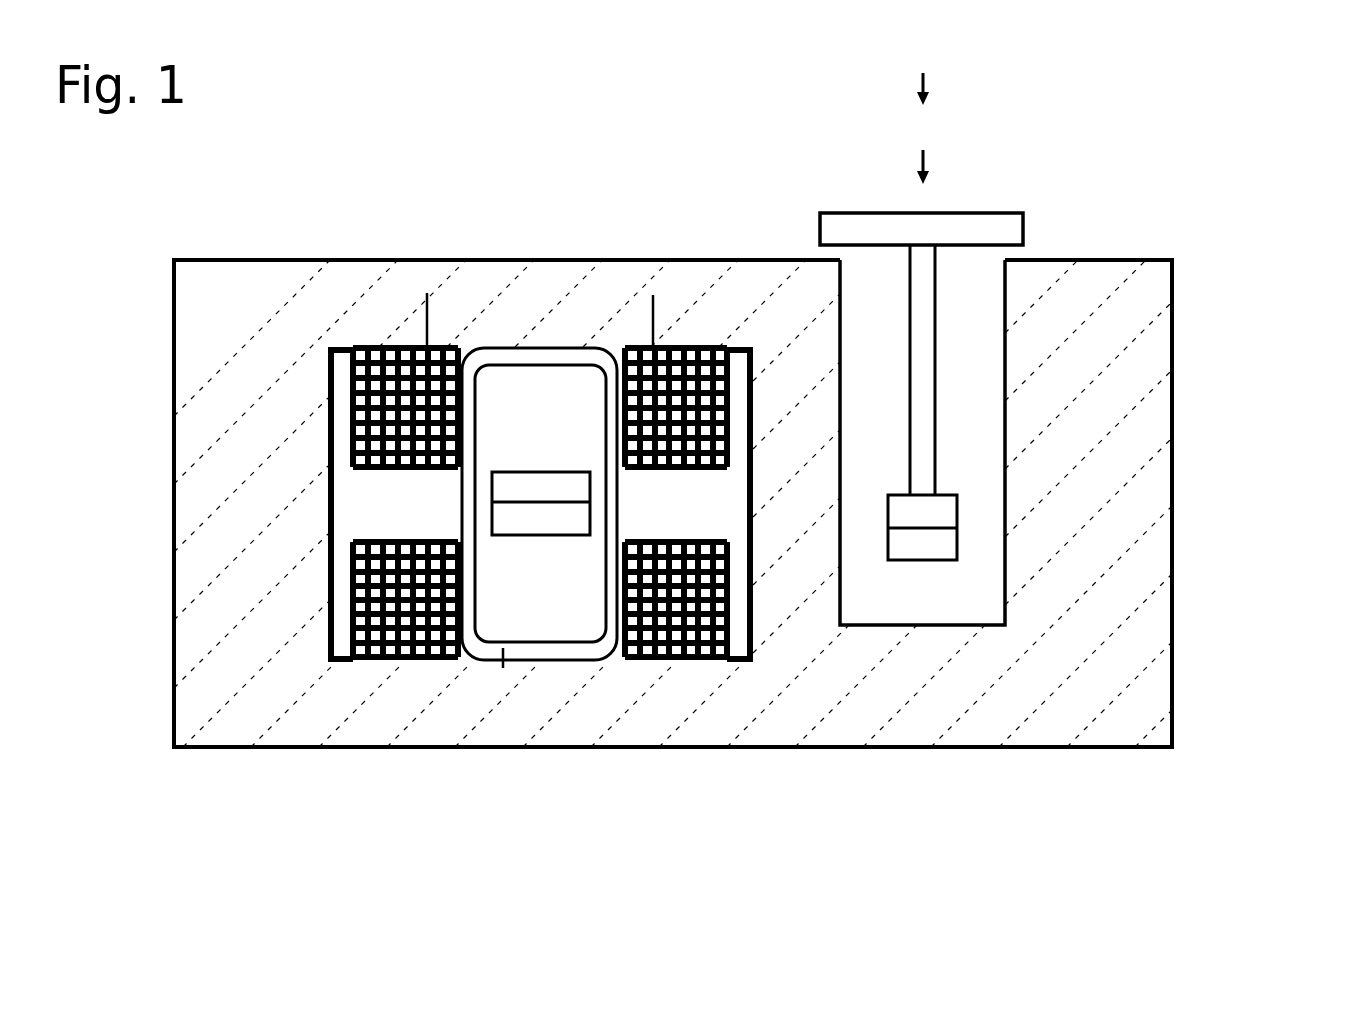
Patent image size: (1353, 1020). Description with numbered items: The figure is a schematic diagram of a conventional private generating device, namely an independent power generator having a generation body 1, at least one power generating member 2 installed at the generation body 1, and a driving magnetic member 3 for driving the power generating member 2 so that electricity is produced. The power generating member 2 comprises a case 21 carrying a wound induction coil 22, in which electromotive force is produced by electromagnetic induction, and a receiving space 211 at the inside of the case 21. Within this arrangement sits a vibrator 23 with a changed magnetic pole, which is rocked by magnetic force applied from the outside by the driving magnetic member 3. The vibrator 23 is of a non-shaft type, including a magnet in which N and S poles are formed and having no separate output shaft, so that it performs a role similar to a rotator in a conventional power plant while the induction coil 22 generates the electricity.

The generation body 1 is at (1148, 393).
The power generating member 2 is at (325, 590).
The case 21 is at (330, 494).
The receiving space 211 is at (462, 662).
The induction coil 22 is at (385, 347).
The vibrator 23 is at (605, 665).
The driving magnetic member 3 is at (1007, 197).